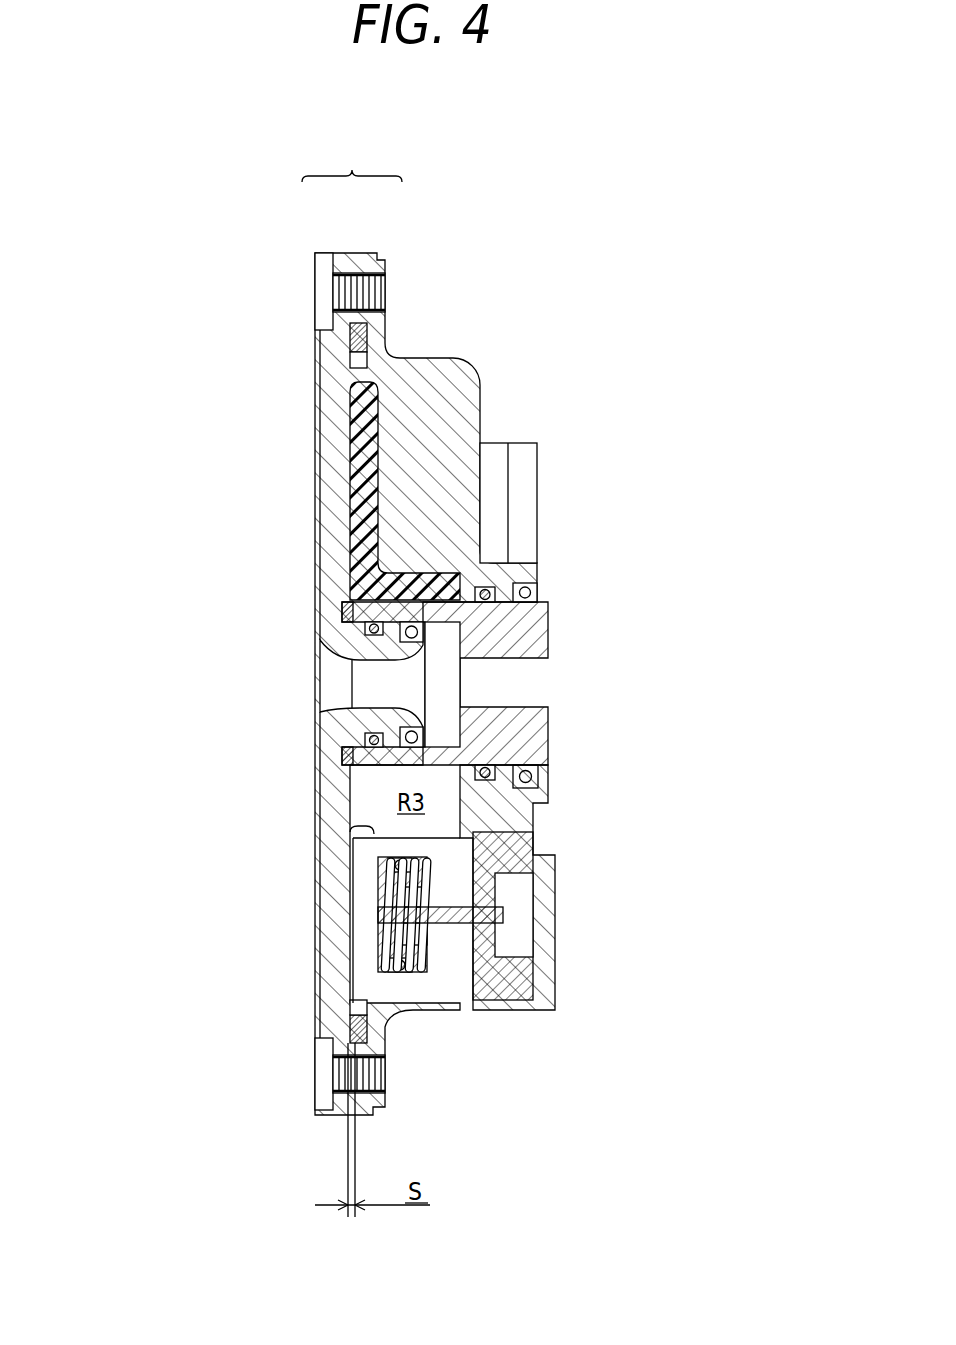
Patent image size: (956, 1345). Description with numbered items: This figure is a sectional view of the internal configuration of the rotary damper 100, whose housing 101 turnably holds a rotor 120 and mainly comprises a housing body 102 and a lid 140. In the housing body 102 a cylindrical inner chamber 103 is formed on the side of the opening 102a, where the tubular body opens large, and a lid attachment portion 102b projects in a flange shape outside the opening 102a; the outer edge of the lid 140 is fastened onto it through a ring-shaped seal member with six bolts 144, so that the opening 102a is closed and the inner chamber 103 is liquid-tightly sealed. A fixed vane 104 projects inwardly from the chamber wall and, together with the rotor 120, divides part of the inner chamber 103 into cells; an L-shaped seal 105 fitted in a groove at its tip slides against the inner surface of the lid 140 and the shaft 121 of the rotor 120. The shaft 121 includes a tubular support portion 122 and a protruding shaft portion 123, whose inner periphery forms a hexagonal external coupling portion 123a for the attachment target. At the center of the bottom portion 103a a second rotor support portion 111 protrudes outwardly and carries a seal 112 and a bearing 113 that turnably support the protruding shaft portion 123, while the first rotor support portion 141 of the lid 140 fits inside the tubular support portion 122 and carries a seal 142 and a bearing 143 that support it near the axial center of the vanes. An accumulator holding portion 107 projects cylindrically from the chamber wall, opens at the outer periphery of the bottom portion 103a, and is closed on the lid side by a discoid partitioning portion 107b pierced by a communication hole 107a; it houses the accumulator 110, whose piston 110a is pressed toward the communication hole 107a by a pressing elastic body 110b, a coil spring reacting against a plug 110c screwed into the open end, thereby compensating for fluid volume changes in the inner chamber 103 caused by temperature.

The rotary damper 100 is at (165, 228).
The housing 101 is at (352, 161).
The housing body 102 is at (363, 250).
The opening 102a is at (353, 393).
The lid attachment portion 102b is at (348, 1095).
The inner chamber 103 is at (367, 803).
The bottom portion 103a is at (470, 811).
The fixed vane 104 is at (355, 440).
The seal 105 is at (348, 468).
The accumulator holding portion 107 is at (362, 832).
The communication hole 107a is at (377, 918).
The partitioning portion 107b is at (352, 890).
The accumulator 110 is at (373, 877).
The piston 110a is at (377, 943).
The pressing elastic body 110b is at (505, 885).
The plug 110c is at (520, 916).
The second rotor support portion 111 is at (530, 750).
The seal 112 is at (490, 735).
The bearing 113 is at (520, 785).
The rotor 120 is at (548, 608).
The shaft 121 is at (400, 780).
The tubular support portion 122 is at (393, 722).
The protruding shaft portion 123 is at (550, 632).
The external coupling portion 123a is at (520, 667).
The lid 140 is at (338, 250).
The first rotor support portion 141 is at (343, 610).
The seal 142 is at (343, 738).
The bearing 143 is at (397, 660).
The bolts 144 is at (315, 292).